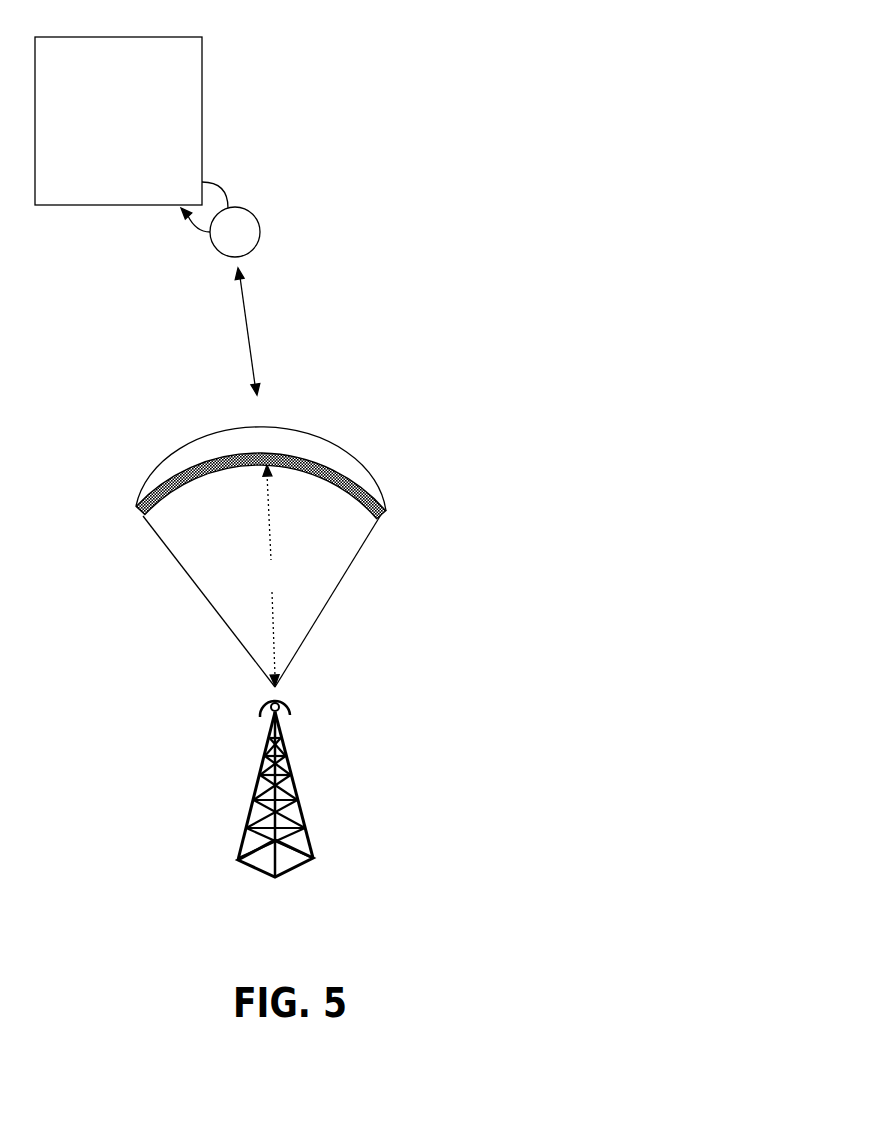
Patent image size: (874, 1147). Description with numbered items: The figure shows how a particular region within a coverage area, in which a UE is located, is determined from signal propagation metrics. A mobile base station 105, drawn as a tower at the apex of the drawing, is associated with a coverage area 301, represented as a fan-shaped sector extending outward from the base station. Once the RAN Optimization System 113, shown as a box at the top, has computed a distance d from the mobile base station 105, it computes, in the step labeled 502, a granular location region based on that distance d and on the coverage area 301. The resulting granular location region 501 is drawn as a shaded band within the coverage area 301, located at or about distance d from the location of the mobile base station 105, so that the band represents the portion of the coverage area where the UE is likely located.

The RAN Optimization System 113 is at (103, 176).
The compute granular location region 502 is at (296, 263).
The coverage area 301 is at (200, 592).
The granular location region 501 is at (380, 517).
The mobile base station 105 is at (298, 872).